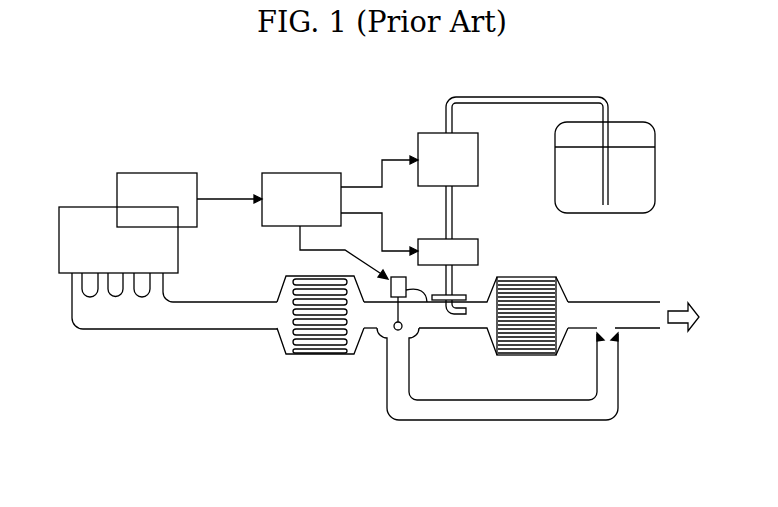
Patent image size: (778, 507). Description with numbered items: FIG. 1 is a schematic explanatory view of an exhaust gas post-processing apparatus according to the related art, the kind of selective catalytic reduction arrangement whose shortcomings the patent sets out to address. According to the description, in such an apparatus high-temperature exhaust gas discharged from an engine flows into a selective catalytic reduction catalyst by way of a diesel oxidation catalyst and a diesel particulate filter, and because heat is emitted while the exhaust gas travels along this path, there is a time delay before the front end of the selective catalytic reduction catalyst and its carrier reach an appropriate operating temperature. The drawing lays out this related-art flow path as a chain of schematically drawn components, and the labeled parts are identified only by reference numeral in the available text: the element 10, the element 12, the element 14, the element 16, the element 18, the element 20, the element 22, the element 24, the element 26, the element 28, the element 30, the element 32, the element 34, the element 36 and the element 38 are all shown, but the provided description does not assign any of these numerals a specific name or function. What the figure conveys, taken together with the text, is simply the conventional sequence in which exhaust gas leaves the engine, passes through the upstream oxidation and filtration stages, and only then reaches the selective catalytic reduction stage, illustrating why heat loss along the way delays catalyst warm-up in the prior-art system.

The engine 10 is at (78, 207).
The exhaust manifold 12 is at (115, 330).
The exhaust pipe 14 is at (222, 302).
The oxidation catalyst 16 is at (307, 354).
The SCR catalyst 18 is at (532, 287).
The injector nozzle 20 is at (460, 328).
The pump 22 is at (478, 152).
The dosing module 24 is at (480, 243).
The reductant tank 26 is at (655, 150).
The recirculation line 28 is at (519, 421).
The return port 30 is at (620, 337).
The sensor 32 is at (426, 302).
The branch junction 34 is at (384, 335).
The dosing control unit 36 is at (297, 173).
The engine control unit 38 is at (157, 173).